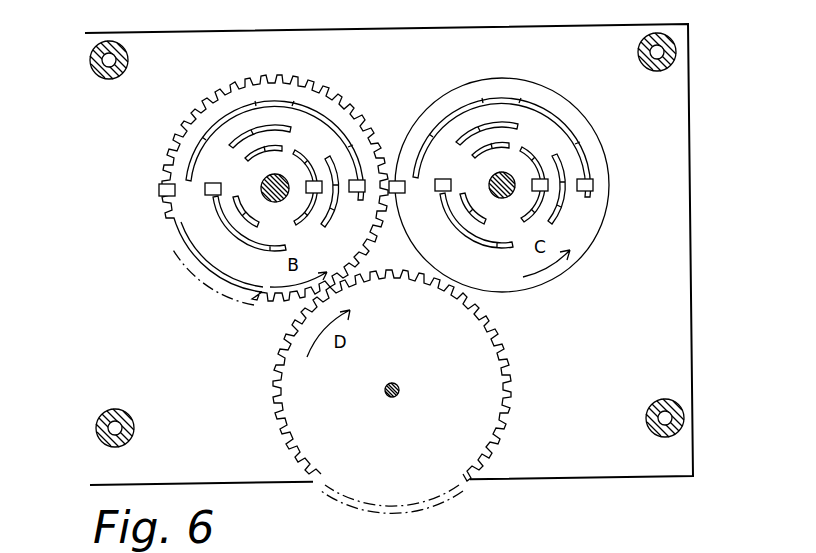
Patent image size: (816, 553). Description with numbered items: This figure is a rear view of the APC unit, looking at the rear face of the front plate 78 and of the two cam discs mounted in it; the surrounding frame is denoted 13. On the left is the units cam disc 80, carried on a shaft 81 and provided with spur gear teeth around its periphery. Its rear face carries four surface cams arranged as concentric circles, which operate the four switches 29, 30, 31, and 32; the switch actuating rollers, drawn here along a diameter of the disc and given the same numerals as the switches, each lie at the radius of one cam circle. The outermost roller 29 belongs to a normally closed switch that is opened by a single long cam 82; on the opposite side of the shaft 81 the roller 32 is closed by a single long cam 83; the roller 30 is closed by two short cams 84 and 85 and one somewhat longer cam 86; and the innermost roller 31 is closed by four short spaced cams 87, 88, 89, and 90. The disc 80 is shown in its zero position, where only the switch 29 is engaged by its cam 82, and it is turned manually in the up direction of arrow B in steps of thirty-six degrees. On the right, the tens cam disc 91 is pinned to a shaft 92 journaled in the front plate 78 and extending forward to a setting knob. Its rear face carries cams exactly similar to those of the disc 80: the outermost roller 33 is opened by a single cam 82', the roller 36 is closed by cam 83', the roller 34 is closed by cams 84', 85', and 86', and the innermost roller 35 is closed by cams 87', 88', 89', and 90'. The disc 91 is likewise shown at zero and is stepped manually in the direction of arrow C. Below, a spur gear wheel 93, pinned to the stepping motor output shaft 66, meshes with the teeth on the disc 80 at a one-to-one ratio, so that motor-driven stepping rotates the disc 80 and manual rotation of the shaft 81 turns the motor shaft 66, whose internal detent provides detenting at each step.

The housing 13 is at (363, 254).
The switch 29 is at (162, 193).
The switch 30 is at (211, 196).
The switch 31 is at (275, 191).
The switch 32 is at (357, 193).
The switch 33 is at (399, 193).
The switch 34 is at (443, 179).
The switch 35 is at (546, 191).
The switch 36 is at (592, 191).
The motor output shaft 66 is at (400, 390).
The front plate 78 is at (140, 364).
The cam disc 80 is at (284, 175).
The shaft 81 is at (279, 201).
The cam 82 is at (275, 178).
The cam 82' is at (502, 169).
The cam 83 is at (294, 142).
The cam 83' is at (530, 147).
The cam 84 is at (362, 170).
The cam 84' is at (612, 189).
The cam 85 is at (291, 98).
The cam 85' is at (520, 97).
The cam 86 is at (241, 230).
The cam 86' is at (476, 235).
The cam 87 is at (279, 141).
The cam 87' is at (544, 121).
The cam 88 is at (321, 162).
The cam 88' is at (572, 203).
The cam 89 is at (312, 201).
The cam 89' is at (578, 242).
The cam 90 is at (245, 195).
The cam 90' is at (464, 229).
The tens cam disc 91 is at (524, 169).
The shaft 92 is at (502, 199).
The spur gear wheel 93 is at (502, 378).